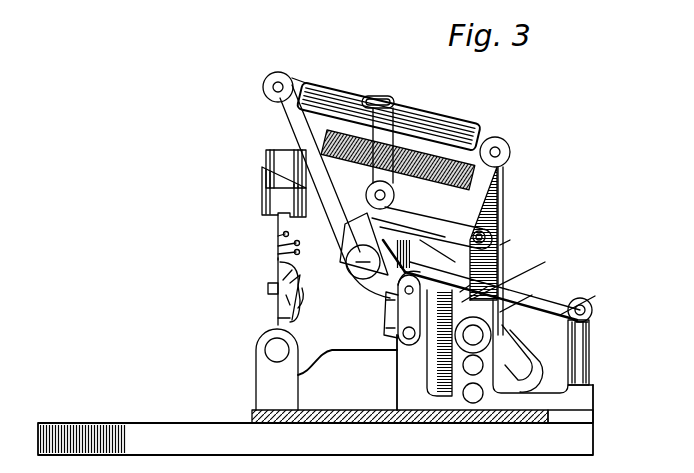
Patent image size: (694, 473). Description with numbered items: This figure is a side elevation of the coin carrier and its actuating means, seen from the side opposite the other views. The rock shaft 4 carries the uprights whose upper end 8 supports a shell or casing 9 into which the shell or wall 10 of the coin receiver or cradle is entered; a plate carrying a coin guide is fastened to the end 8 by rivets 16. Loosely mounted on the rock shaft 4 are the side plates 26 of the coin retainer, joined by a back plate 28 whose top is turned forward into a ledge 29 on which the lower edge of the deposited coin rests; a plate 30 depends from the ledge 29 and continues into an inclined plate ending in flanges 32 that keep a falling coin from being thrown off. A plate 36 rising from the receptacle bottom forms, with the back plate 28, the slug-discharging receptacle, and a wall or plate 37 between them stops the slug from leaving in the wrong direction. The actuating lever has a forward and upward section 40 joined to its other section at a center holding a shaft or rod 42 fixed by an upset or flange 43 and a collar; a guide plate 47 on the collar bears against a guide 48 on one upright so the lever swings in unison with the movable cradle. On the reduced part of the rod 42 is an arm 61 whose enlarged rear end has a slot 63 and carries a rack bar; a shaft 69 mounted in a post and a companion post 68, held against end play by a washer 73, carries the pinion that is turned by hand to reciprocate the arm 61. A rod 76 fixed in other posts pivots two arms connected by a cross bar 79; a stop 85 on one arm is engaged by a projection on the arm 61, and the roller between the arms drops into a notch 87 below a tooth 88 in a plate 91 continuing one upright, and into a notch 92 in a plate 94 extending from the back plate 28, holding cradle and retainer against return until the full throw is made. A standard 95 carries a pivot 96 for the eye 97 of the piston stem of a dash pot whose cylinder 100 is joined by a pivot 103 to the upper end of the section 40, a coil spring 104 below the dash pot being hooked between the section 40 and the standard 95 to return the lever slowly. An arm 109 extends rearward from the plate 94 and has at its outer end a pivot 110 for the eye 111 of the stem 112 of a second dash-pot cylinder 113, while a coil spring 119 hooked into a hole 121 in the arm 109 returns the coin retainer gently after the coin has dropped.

The rock shaft 4 is at (268, 356).
The upper end 8 is at (278, 228).
The shell or casing 9 is at (262, 184).
The shell or wall 10 is at (276, 157).
The rivets 16 is at (277, 250).
The plates 26 is at (272, 325).
The back plate 28 is at (264, 292).
The ledge 29 is at (268, 283).
The plate 30 is at (268, 289).
The flange 32 is at (270, 291).
The plate 36 is at (300, 305).
The wall or plate 37 is at (292, 296).
The section of actuating lever 40 is at (326, 193).
The shaft or rod 42 is at (436, 228).
The upset or flange 43 is at (420, 250).
The guide plate 47 is at (364, 244).
The guide 48 is at (400, 224).
The arm 61 is at (545, 262).
The slot 63 is at (507, 352).
The companion post 68 is at (595, 296).
The shaft 69 is at (532, 295).
The washer 73 is at (487, 287).
The shaft or rod 76 is at (418, 334).
The cross plate or bar 79 is at (487, 292).
The stop 85 is at (418, 271).
The notch 87 is at (392, 326).
The tooth or point 88 is at (390, 312).
The plate 91 is at (309, 310).
The notch 92 is at (442, 250).
The plate 94 is at (364, 269).
The standard 95 is at (500, 210).
The pivot 96 is at (512, 154).
The eye 97 is at (503, 143).
The cylinder 100 is at (430, 130).
The pivot 103 is at (292, 80).
The coil spring 104 is at (478, 160).
The arm 109 is at (470, 285).
The pivot 110 is at (593, 313).
The eye 111 is at (583, 296).
The stem 112 is at (582, 321).
The cylinder 113 is at (590, 340).
The coil spring 119 is at (495, 286).
The hole 121 is at (504, 246).